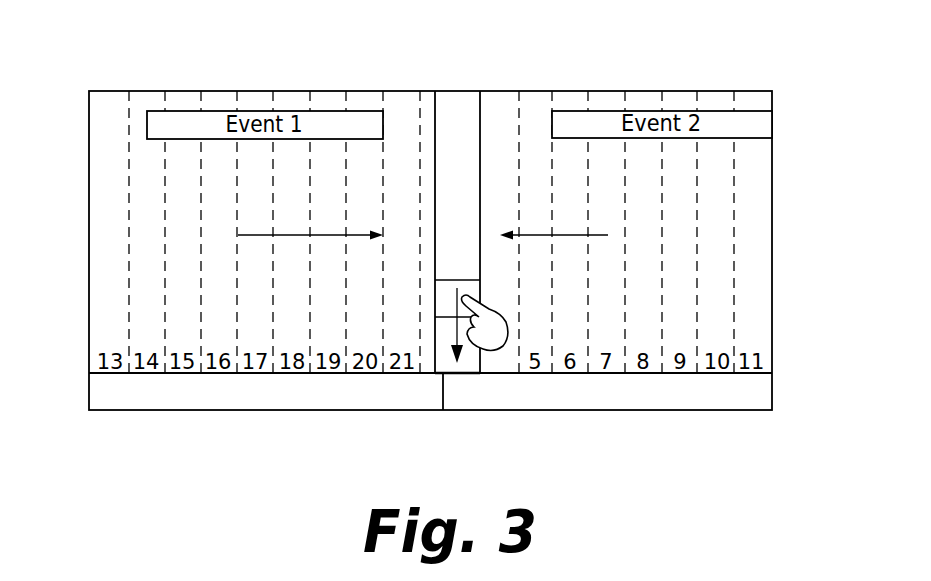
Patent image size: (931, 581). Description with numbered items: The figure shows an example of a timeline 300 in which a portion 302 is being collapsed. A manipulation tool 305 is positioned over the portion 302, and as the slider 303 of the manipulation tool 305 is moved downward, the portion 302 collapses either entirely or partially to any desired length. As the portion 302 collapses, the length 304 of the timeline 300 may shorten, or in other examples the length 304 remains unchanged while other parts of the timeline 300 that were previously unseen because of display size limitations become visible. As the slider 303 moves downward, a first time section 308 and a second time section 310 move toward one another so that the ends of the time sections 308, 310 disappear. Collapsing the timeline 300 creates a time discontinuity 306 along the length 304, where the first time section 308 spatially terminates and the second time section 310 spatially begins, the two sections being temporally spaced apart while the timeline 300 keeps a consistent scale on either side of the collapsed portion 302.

The timeline 300 is at (163, 65).
The portion 302 is at (385, 77).
The slider 303 is at (468, 287).
The length 304 is at (431, 408).
The manipulation tool 305 is at (438, 164).
The time discontinuity 306 is at (425, 388).
The first time section 308 is at (70, 386).
The second time section 310 is at (712, 366).